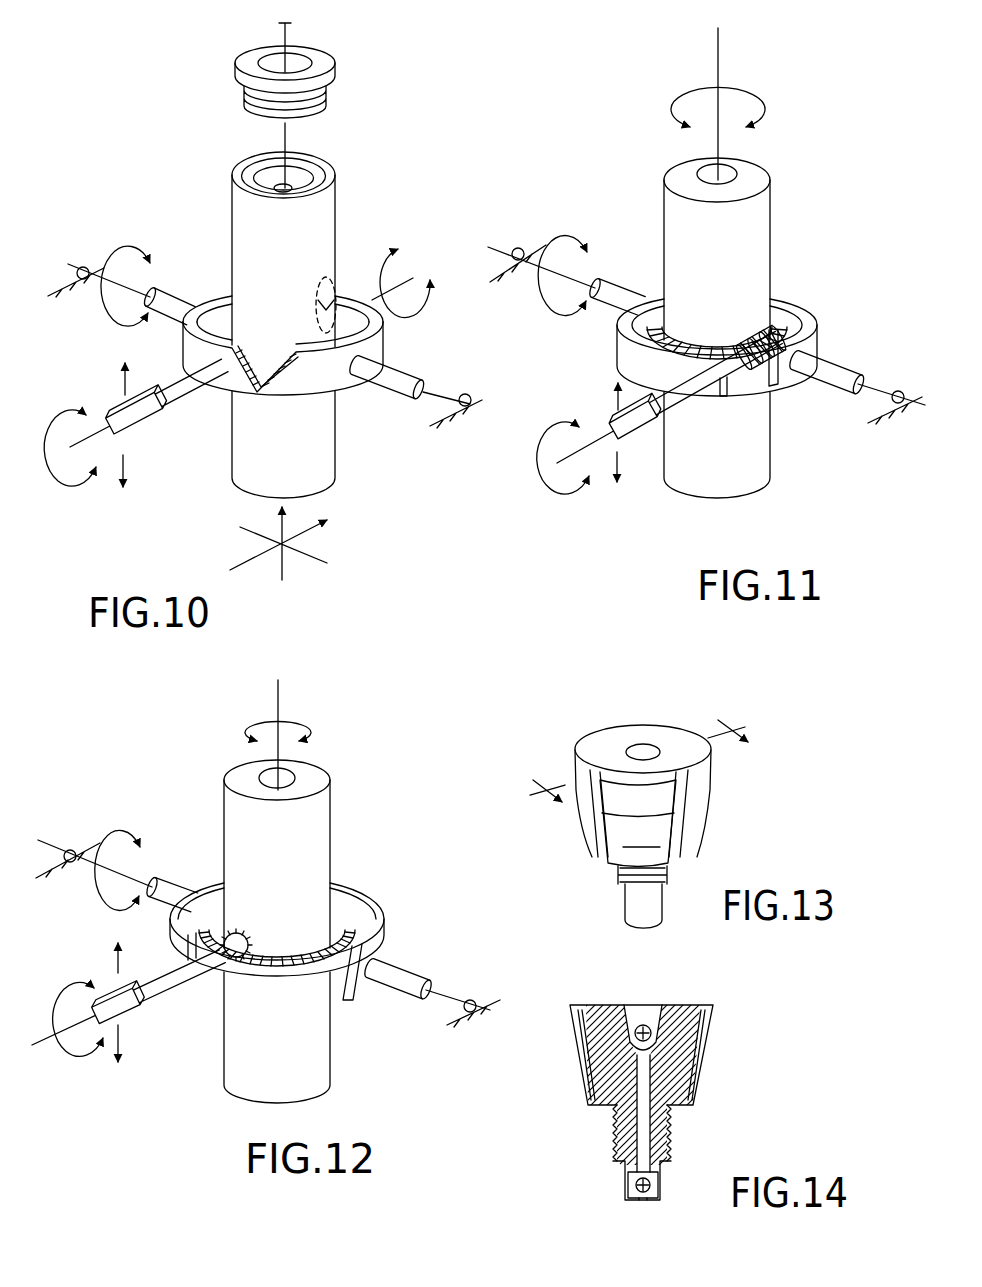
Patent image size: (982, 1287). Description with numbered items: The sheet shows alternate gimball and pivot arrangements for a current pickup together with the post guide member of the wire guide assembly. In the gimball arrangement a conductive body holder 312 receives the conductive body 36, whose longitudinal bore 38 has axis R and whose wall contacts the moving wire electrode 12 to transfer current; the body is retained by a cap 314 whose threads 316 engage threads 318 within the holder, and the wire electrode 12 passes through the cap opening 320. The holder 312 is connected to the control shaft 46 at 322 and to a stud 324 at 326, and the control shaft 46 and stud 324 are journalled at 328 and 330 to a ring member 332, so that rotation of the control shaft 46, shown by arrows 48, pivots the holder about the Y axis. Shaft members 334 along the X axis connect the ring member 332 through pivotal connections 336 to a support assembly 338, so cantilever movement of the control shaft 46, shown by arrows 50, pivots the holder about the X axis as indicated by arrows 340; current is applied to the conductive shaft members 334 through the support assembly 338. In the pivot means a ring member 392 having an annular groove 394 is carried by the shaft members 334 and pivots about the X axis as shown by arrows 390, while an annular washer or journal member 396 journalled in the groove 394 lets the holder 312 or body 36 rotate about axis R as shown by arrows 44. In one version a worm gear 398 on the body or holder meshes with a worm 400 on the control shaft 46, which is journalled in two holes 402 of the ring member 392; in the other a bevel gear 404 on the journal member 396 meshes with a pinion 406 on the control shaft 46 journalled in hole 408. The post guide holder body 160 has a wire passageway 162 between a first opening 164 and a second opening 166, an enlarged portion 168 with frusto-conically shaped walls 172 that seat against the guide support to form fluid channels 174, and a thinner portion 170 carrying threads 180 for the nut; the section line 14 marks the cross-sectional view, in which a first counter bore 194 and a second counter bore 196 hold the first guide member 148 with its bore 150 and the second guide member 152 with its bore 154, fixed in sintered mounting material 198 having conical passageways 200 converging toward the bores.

In FIG. 10, the wire electrode 12 is at (282, 24).
In FIG. 13, the section line 14 is at (639, 753).
In FIG. 10, the conductive body 36 is at (262, 183).
In FIG. 10, the conductive body bore 38 is at (270, 185).
In FIG. 11, the arrows 44 is at (738, 90).
In FIG. 12, the arrows 44 is at (300, 730).
In FIG. 10, the control shaft 46 is at (197, 395).
In FIG. 11, the control shaft 46 is at (664, 440).
In FIG. 12, the control shaft 46 is at (168, 985).
In FIG. 10, the arrows 48 is at (80, 482).
In FIG. 11, the arrows 48 is at (568, 492).
In FIG. 12, the arrows 48 is at (75, 1058).
In FIG. 10, the arrows 50 is at (124, 380).
In FIG. 11, the arrows 50 is at (615, 392).
In FIG. 12, the arrows 50 is at (112, 957).
In FIG. 14, the first guide member 148 is at (656, 1195).
In FIG. 14, the bore 150 is at (630, 1190).
In FIG. 14, the second guide member 152 is at (592, 1050).
In FIG. 14, the bore 154 is at (662, 1040).
In FIG. 14, the post guide holder body 160 is at (685, 1060).
In FIG. 14, the wire passageway 162 is at (655, 1126).
In FIG. 14, the first opening 164 is at (660, 1168).
In FIG. 14, the second opening 166 is at (612, 1082).
In FIG. 13, the enlarged portion 168 is at (716, 789).
In FIG. 14, the enlarged portion 168 is at (718, 1018).
In FIG. 13, the thinner portion 170 is at (620, 897).
In FIG. 14, the thinner portion 170 is at (616, 1165).
In FIG. 13, the outer frusto-conically shaped walls 172 is at (585, 824).
In FIG. 14, the outer frusto-conically shaped walls 172 is at (697, 1095).
In FIG. 13, the fluid channels 174 is at (596, 838).
In FIG. 14, the fluid channels 174 is at (695, 1078).
In FIG. 13, the threads 180 is at (668, 872).
In FIG. 14, the threads 180 is at (615, 1128).
In FIG. 14, the first counter bore 194 is at (637, 1200).
In FIG. 14, the second counter bore 196 is at (645, 1008).
In FIG. 14, the mounting material 198 is at (622, 1022).
In FIG. 13, the conical passageways 200 is at (650, 750).
In FIG. 14, the conical passageways 200 is at (635, 1010).
In FIG. 10, the conductive body holder 312 is at (328, 226).
In FIG. 11, the conductive body holder 312 is at (758, 232).
In FIG. 12, the conductive body holder 312 is at (312, 840).
In FIG. 10, the cap 314 is at (336, 72).
In FIG. 10, the threads 316 is at (326, 100).
In FIG. 10, the threads 318 is at (310, 176).
In FIG. 10, the opening 320 is at (300, 61).
In FIG. 10, the connection 322 is at (243, 348).
In FIG. 10, the stud 324 is at (370, 300).
In FIG. 10, the connection 326 is at (335, 292).
In FIG. 10, the pivotal connection 328 is at (230, 398).
In FIG. 10, the pivotal connection 330 is at (383, 318).
In FIG. 10, the ring member 332 is at (323, 377).
In FIG. 10, the shaft members 334 is at (165, 312).
In FIG. 11, the shaft members 334 is at (613, 290).
In FIG. 12, the shaft members 334 is at (172, 890).
In FIG. 10, the pivotal connection 336 is at (88, 265).
In FIG. 11, the pivotal connection 336 is at (521, 248).
In FIG. 12, the pivotal connection 336 is at (72, 849).
In FIG. 10, the support assembly 338 is at (70, 298).
In FIG. 11, the support assembly 338 is at (498, 272).
In FIG. 12, the support assembly 338 is at (58, 882).
In FIG. 10, the arrows 340 is at (135, 252).
In FIG. 11, the arrows 390 is at (572, 235).
In FIG. 12, the arrows 390 is at (128, 830).
In FIG. 11, the ring member 392 is at (634, 360).
In FIG. 12, the ring member 392 is at (362, 900).
In FIG. 11, the annular groove 394 is at (745, 387).
In FIG. 12, the annular groove 394 is at (338, 985).
In FIG. 11, the annular washer or journal member 396 is at (760, 400).
In FIG. 12, the annular washer or journal member 396 is at (262, 970).
In FIG. 11, the worm gear 398 is at (700, 338).
In FIG. 11, the worm 400 is at (782, 325).
In FIG. 11, the holes 402 is at (790, 333).
In FIG. 12, the bevel gear 404 is at (287, 968).
In FIG. 12, the pinion 406 is at (214, 968).
In FIG. 12, the hole 408 is at (172, 950).